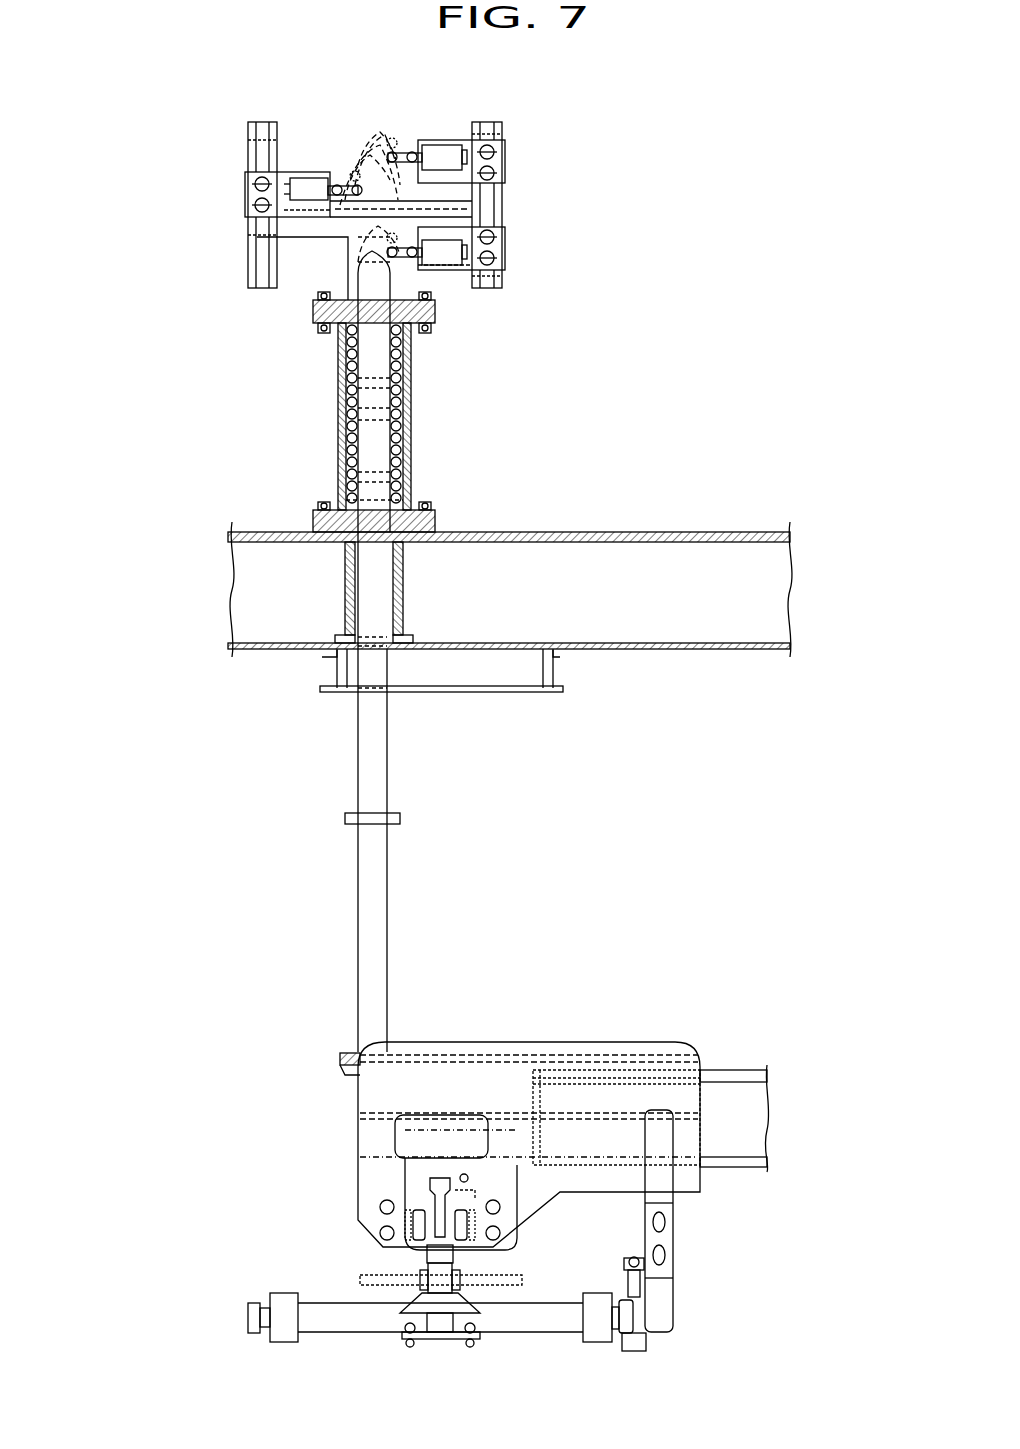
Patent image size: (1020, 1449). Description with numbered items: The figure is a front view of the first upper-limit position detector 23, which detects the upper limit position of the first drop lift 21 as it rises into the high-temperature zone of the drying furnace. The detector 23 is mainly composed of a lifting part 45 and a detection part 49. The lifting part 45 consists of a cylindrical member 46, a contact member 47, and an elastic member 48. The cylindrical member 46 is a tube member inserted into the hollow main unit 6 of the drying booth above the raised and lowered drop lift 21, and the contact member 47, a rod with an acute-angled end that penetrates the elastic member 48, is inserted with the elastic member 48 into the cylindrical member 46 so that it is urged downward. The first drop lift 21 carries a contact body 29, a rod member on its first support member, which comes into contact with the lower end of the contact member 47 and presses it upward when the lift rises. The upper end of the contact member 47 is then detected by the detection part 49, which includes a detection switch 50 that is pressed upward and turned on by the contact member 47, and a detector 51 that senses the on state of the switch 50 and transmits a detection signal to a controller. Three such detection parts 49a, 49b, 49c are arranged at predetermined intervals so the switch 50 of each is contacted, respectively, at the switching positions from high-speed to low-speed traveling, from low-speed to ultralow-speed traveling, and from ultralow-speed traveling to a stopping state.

The main unit 6 is at (672, 532).
The first drop lift 21 is at (348, 1123).
The first upper-limit position detector 23 is at (540, 203).
The contact body 29 is at (378, 937).
The lifting part 45 is at (518, 376).
The cylindrical member 46 is at (410, 358).
The contact member 47 is at (378, 427).
The elastic member 48 is at (410, 460).
The detection part 49 is at (379, 223).
The detection part 49a is at (518, 296).
The detection part 49b is at (168, 96).
The detection part 49c is at (592, 96).
The detection switch 50 is at (345, 178).
The detector 51 is at (307, 178).